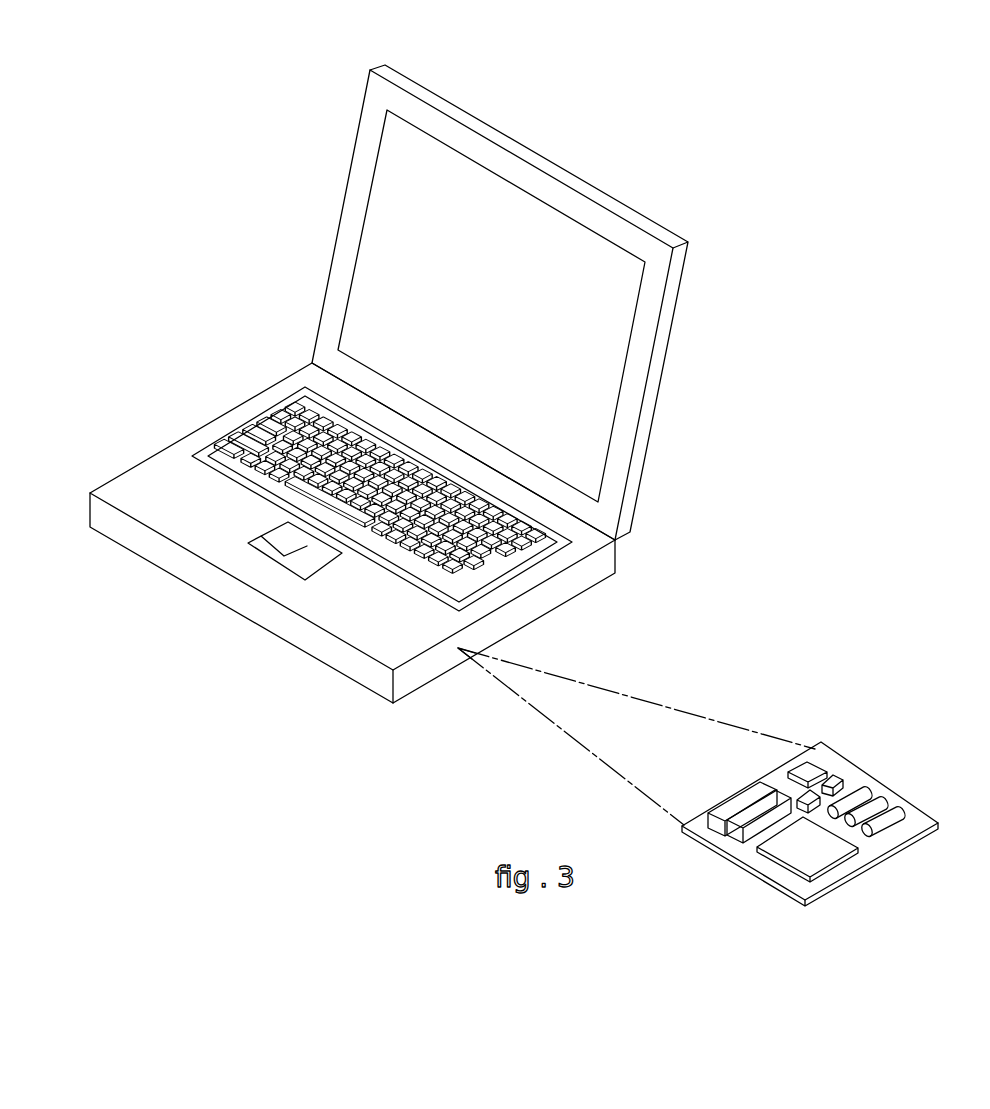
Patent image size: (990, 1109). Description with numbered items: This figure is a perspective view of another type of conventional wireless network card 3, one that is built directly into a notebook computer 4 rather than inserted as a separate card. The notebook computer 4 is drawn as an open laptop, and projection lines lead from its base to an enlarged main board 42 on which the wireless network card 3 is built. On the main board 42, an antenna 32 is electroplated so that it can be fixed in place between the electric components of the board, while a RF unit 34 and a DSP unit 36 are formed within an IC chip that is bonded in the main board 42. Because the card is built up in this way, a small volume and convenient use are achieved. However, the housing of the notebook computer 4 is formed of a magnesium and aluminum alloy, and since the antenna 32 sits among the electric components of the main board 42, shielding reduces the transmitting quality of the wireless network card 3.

The wireless network card 3 is at (805, 722).
The notebook computer 4 is at (670, 312).
The antenna 32 is at (815, 763).
The RF unit 34 is at (797, 800).
The DSP unit 36 is at (841, 739).
The main board 42 is at (787, 877).